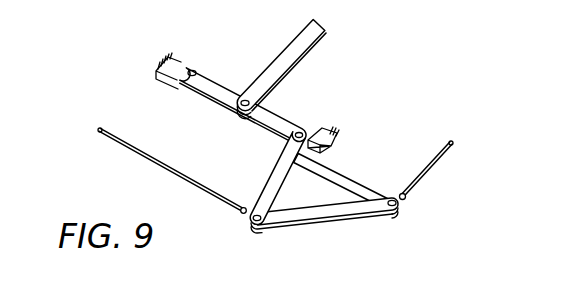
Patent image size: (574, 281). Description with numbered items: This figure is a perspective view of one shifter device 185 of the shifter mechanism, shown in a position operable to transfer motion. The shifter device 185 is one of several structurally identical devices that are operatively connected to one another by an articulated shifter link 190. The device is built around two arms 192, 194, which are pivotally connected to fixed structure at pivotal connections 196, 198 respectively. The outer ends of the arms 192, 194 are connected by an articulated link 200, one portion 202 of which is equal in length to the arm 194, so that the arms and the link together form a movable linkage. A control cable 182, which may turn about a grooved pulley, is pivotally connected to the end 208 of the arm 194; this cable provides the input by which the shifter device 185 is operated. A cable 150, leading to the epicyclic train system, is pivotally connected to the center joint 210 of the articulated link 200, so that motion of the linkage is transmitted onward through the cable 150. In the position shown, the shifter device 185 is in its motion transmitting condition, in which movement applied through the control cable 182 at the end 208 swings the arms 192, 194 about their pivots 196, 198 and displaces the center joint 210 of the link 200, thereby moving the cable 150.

The cable 150 is at (183, 184).
The control cable 182 is at (419, 183).
The shifter device 185 is at (368, 144).
The articulated shifter link 190 is at (283, 70).
The arm 192 is at (241, 114).
The arm 194 is at (355, 183).
The pivotal connection 196 is at (196, 72).
The pivotal connection 198 is at (303, 132).
The articulated link 200 is at (324, 237).
The link portion 202 is at (327, 218).
The end of arm 208 is at (402, 207).
The center joint 210 is at (247, 218).